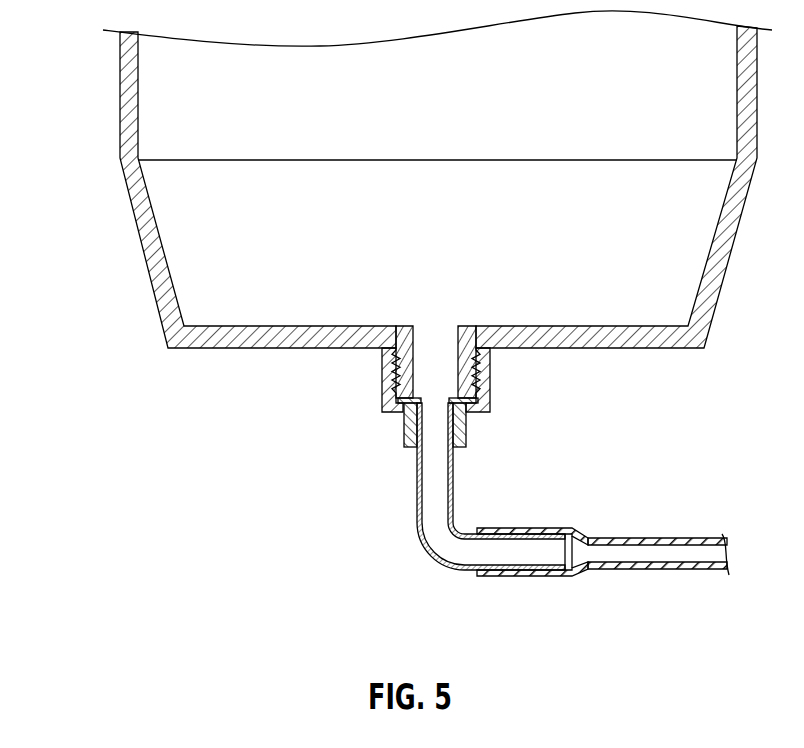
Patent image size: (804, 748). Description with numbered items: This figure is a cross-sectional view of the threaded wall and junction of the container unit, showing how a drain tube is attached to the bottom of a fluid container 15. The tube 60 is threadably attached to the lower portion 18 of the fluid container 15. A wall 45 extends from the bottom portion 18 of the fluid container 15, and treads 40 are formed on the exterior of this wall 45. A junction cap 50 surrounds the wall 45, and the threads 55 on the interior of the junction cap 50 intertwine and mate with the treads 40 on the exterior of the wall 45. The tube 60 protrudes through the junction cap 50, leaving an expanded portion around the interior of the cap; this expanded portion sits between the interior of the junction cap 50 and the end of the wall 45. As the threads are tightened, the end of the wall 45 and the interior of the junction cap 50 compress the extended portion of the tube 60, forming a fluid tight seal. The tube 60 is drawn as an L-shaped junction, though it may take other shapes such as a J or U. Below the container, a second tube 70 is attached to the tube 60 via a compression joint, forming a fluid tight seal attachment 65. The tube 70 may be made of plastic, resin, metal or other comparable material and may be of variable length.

The fluid container 15 is at (410, 179).
The lower portion 18 is at (147, 265).
The threads 40 is at (483, 359).
The wall 45 is at (473, 399).
The junction cap 50 is at (383, 400).
The threads 55 is at (385, 360).
The tube 60 is at (416, 504).
The fluid tight seal attachment 65 is at (522, 577).
The tube 70 is at (652, 536).